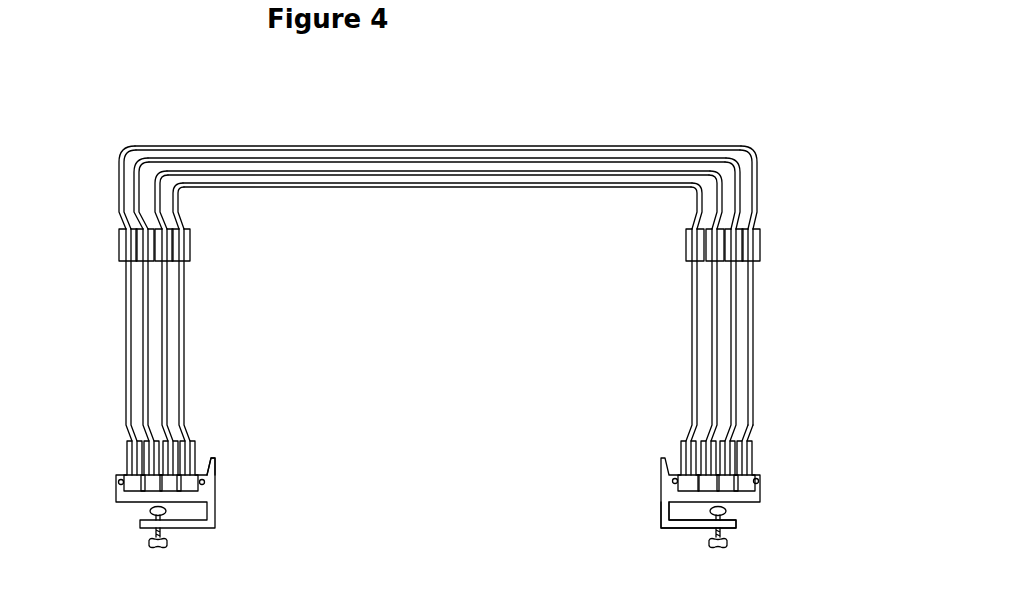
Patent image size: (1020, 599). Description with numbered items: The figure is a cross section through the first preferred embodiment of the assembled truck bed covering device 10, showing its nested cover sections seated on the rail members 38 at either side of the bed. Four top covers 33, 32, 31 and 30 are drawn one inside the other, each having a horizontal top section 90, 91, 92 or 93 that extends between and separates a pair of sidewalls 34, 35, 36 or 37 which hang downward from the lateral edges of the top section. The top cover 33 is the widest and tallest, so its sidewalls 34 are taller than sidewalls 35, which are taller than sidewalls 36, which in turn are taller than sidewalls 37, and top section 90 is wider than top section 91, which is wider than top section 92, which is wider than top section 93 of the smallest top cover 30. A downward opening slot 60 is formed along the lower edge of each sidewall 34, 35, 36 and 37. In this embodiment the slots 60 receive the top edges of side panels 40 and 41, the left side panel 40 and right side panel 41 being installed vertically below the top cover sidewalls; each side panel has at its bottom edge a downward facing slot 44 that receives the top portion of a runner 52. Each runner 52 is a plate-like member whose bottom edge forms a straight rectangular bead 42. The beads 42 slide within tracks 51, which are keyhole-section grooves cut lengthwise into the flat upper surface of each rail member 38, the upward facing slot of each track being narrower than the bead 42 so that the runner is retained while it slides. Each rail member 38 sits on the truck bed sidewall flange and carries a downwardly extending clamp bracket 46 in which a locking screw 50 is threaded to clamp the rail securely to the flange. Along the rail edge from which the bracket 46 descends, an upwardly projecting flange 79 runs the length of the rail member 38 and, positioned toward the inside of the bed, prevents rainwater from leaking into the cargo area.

The device for adjustably covering a truck cargo bed 10 is at (527, 93).
The top cover 30 is at (445, 142).
The top cover 31 is at (445, 138).
The top cover 32 is at (442, 143).
The top cover 33 is at (439, 138).
The top cover sidewall 34 is at (119, 168).
The top cover sidewall 35 is at (134, 183).
The top cover sidewall 36 is at (155, 197).
The top cover sidewall 37 is at (173, 208).
The rail member 38 is at (208, 493).
The side panel 40 is at (126, 355).
The side panel 41 is at (753, 380).
The runner bead 42 is at (117, 484).
The downward facing slot 44 is at (750, 437).
The clamp bracket 46 is at (667, 517).
The locking screw 50 is at (735, 532).
The track 51 is at (683, 488).
The runner 52 is at (132, 457).
The downward opening slot 60 is at (122, 233).
The upwardly projecting flange 79 is at (215, 467).
The horizontal top section 90 is at (184, 148).
The horizontal top section 91 is at (215, 162).
The horizontal top section 92 is at (242, 174).
The horizontal top section 93 is at (272, 186).